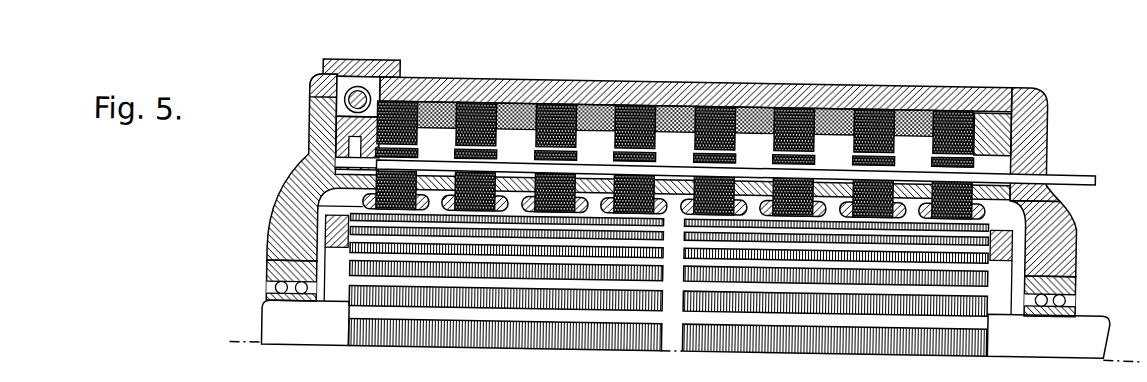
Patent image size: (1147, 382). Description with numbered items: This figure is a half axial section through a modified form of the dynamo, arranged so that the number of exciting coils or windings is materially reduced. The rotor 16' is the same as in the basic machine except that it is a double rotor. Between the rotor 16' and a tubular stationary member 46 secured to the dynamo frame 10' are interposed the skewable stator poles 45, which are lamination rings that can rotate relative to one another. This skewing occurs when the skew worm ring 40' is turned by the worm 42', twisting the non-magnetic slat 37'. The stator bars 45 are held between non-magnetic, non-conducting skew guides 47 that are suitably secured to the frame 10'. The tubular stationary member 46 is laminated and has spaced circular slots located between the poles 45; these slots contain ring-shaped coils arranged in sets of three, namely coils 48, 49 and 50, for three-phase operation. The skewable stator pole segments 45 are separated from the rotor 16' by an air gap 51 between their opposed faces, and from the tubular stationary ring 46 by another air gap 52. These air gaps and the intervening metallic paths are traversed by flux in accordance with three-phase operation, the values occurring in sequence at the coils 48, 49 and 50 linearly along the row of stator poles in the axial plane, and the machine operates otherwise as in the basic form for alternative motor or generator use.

The dynamo frame 10' is at (691, 121).
The rotor 16' is at (664, 297).
The non-magnetic slat 37' is at (747, 149).
The skew worm ring 40' is at (316, 122).
The worm 42' is at (304, 83).
The skewable stator poles 45 is at (379, 170).
The tubular stationary member 46 is at (631, 99).
The skew guides 47 is at (1056, 207).
The ring-shaped coil 48 is at (451, 131).
The ring-shaped coil 49 is at (533, 117).
The ring-shaped coil 50 is at (608, 113).
The air gap 51 is at (369, 207).
The air gap 52 is at (399, 140).